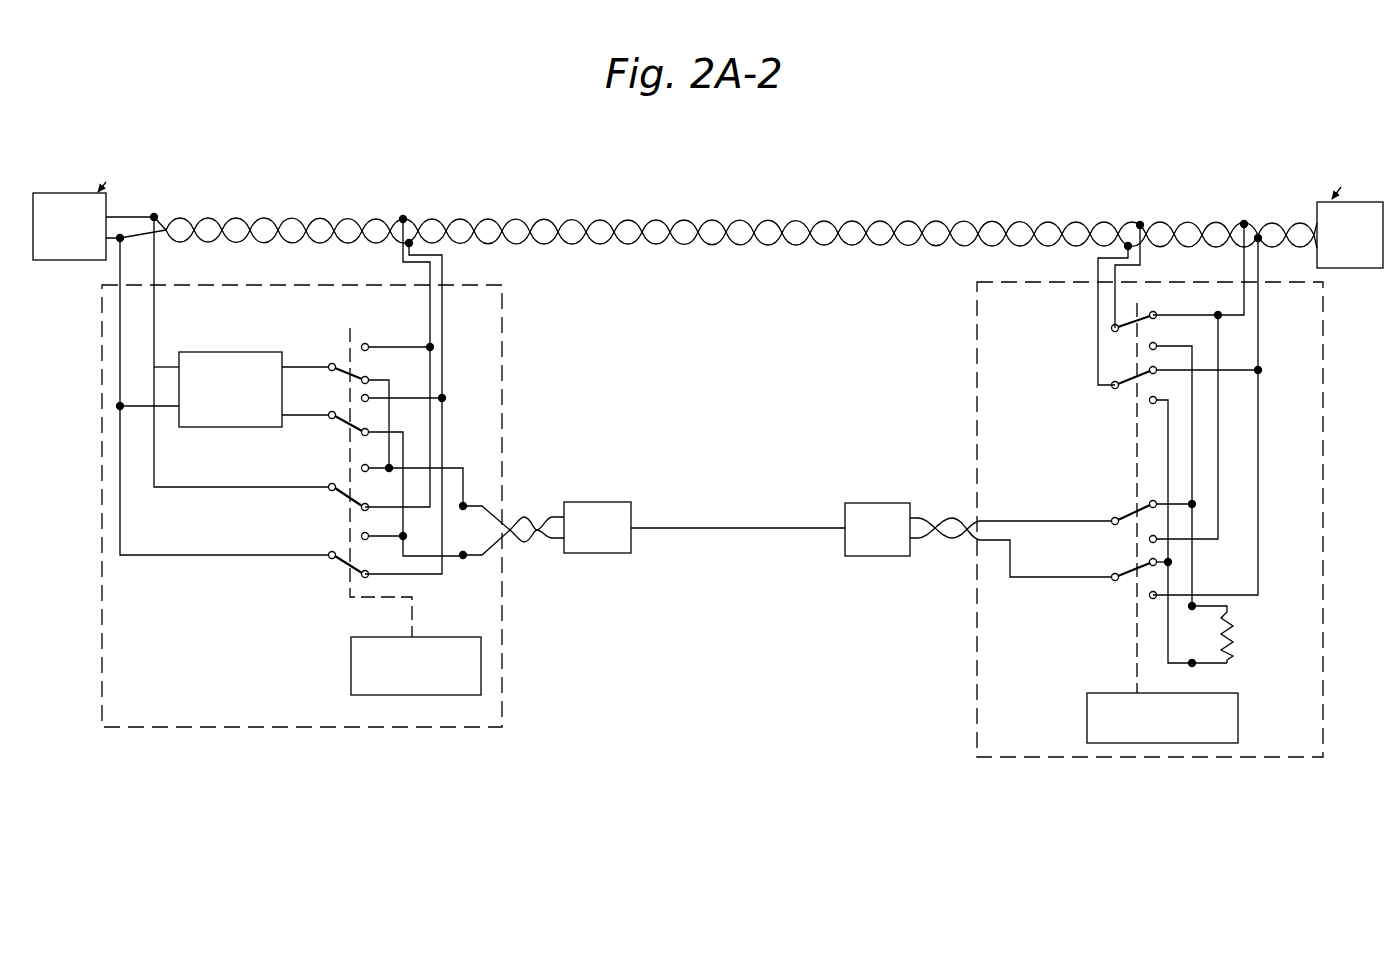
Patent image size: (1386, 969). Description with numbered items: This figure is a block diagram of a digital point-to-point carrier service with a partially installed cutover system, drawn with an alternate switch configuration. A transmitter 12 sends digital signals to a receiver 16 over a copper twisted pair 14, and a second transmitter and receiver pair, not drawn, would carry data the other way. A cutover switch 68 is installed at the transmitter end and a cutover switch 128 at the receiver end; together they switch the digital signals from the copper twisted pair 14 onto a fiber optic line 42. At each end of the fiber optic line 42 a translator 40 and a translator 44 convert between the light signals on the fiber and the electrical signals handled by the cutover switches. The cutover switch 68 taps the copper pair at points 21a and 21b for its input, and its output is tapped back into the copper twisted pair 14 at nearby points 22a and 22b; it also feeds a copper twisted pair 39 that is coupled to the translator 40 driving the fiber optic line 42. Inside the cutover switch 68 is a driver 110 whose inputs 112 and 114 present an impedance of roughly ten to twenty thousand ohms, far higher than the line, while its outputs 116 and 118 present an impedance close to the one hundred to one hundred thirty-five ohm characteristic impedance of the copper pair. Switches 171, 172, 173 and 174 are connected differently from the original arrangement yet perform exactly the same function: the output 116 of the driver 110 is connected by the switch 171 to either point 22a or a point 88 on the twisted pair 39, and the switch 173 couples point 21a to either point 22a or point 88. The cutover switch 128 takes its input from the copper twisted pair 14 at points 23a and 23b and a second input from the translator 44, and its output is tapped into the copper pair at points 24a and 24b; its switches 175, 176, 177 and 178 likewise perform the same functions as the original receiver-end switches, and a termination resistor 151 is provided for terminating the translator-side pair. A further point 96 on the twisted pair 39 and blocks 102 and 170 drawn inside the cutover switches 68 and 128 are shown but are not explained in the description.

The transmitter 12 is at (61, 257).
The copper twisted pair 14 is at (780, 217).
The receiver 16 is at (1370, 263).
The tap point 21a is at (160, 214).
The tap point 21b is at (123, 243).
The tap point 22a is at (403, 218).
The tap point 22b is at (412, 245).
The tap point 23a is at (1140, 222).
The tap point 23b is at (1126, 246).
The tap point 24a is at (1243, 221).
The tap point 24b is at (1255, 242).
The copper twisted pair 39 is at (536, 511).
The translator 40 is at (607, 502).
The fiber optic line 42 is at (645, 528).
The translator 44 is at (884, 503).
The cutover switch 68 is at (466, 727).
The point 88 is at (463, 506).
The connection node 96 is at (463, 555).
The switch control 102 is at (482, 657).
The driver 110 is at (229, 413).
The driver input 112 is at (179, 360).
The driver input 114 is at (176, 410).
The driver output 116 is at (326, 364).
The driver output 118 is at (328, 413).
The cutover switch 128 is at (976, 757).
The termination resistor 151 is at (1233, 624).
The switch control 170 is at (1240, 703).
The switch 171 is at (338, 344).
The switch 172 is at (336, 437).
The switch 173 is at (336, 504).
The switch 174 is at (336, 567).
The switch 175 is at (1157, 331).
The switch 176 is at (1129, 396).
The switch 177 is at (1115, 510).
The switch 178 is at (1121, 607).